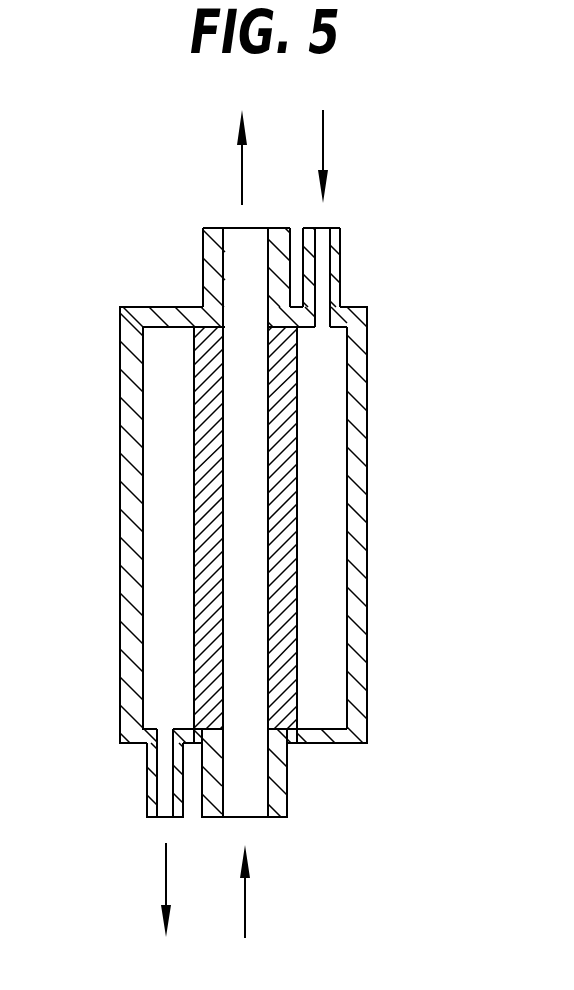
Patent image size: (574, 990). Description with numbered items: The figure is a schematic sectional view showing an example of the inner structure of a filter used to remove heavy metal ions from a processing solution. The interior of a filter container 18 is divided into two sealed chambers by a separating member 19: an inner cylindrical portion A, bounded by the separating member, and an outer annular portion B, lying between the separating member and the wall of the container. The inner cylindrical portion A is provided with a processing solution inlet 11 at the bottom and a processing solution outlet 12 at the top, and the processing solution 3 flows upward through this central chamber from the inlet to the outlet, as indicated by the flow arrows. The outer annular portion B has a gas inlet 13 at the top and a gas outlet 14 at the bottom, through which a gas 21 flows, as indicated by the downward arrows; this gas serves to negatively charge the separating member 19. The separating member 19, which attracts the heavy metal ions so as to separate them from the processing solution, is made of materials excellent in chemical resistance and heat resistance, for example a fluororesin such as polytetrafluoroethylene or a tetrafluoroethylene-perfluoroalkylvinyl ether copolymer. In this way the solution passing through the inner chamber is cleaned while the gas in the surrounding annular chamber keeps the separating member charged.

The processing solution 3 is at (238, 157).
The gas 21 is at (325, 136).
The processing solution inlet 11 is at (258, 818).
The processing solution outlet 12 is at (233, 228).
The gas inlet 13 is at (320, 228).
The gas outlet 14 is at (147, 818).
The filter container 18 is at (355, 537).
The separating member 19 is at (300, 417).
The inner cylindrical portion A is at (247, 498).
The outer annular portion B is at (172, 647).